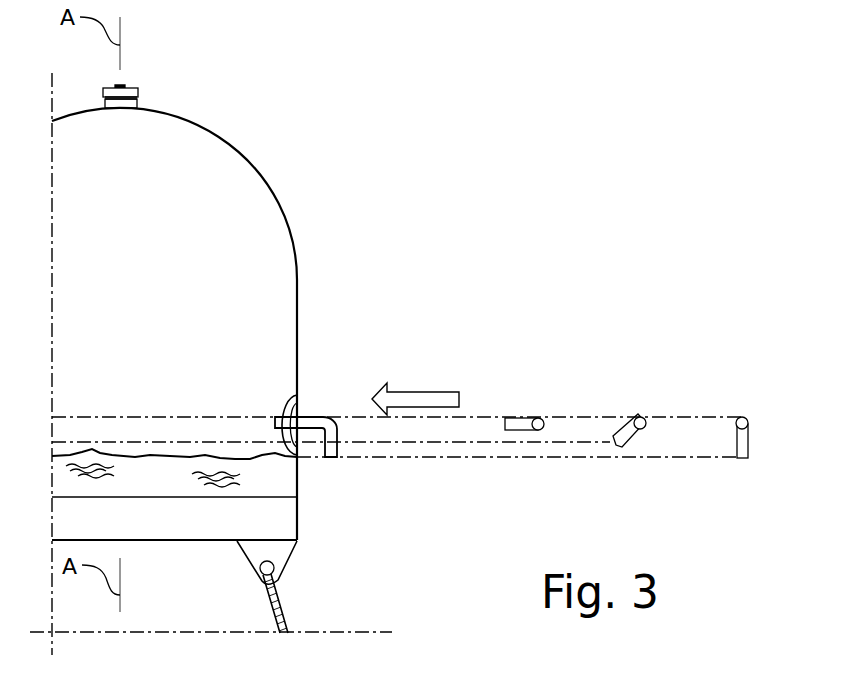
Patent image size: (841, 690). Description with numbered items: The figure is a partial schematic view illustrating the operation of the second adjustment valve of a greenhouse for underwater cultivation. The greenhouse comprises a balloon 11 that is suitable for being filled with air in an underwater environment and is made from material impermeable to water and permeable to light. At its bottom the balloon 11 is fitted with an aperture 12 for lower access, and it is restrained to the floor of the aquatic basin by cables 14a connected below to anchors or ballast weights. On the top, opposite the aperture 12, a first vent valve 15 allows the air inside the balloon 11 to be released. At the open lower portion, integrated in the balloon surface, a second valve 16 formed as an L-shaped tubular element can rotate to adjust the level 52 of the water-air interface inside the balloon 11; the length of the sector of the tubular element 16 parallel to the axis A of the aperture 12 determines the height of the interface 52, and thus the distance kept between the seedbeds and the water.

The balloon 11 is at (262, 178).
The aperture for lower access 12 is at (190, 541).
The cables 14a is at (281, 609).
The first vent valve 15 is at (135, 80).
The second valve 16 is at (313, 417).
The level of the water-air interface 52 is at (123, 454).